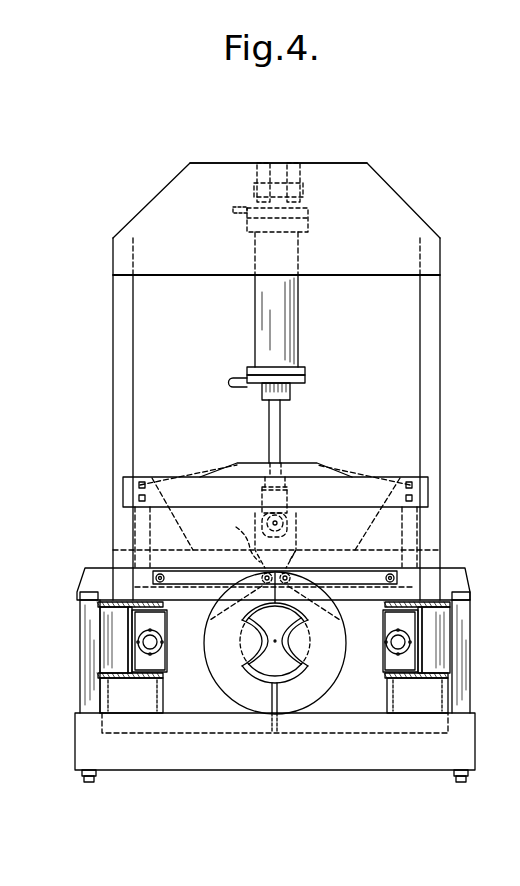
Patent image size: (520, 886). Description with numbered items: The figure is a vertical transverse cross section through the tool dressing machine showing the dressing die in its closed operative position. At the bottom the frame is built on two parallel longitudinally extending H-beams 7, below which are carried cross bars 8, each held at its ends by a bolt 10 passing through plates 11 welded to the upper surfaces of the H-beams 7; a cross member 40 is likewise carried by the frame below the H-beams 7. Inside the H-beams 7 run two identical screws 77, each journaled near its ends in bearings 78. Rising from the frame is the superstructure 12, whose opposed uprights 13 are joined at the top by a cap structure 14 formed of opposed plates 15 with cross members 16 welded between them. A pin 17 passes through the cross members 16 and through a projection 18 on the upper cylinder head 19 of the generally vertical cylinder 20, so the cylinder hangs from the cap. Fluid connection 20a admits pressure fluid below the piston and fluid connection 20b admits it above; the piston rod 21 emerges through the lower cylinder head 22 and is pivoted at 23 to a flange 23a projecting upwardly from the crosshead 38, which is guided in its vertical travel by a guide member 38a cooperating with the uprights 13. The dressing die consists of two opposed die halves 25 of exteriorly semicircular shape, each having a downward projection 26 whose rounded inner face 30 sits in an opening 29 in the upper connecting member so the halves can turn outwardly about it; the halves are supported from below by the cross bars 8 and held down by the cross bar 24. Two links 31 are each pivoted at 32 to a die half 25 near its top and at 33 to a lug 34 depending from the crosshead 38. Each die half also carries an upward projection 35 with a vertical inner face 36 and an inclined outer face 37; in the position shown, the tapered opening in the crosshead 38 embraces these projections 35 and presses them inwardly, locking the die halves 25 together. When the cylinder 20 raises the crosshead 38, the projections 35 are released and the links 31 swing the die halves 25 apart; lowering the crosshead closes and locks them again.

The H-beams 7 is at (130, 622).
The cross bars 8 is at (374, 770).
The bolt 10 is at (95, 782).
The plates 11 is at (110, 598).
The superstructure 12 is at (113, 344).
The uprights 13 is at (118, 307).
The cap structure 14 is at (384, 181).
The plates 15 is at (317, 172).
The cross members 16 is at (288, 170).
The pin 17 is at (300, 192).
The projection 18 is at (257, 183).
The upper cylinder head 19 is at (305, 217).
The cylinder 20 is at (298, 312).
The fluid connection 20a is at (230, 383).
The fluid connection 20b is at (236, 212).
The piston rod 21 is at (280, 425).
The lower cylinder head 22 is at (292, 381).
The pivot 23 is at (283, 510).
The flange 23a is at (260, 515).
The cross bar 24 is at (327, 470).
The die halves 25 is at (226, 682).
The downward projection 26 is at (288, 720).
The opening 29 is at (258, 722).
The inner faces 30 is at (290, 723).
The links 31 is at (198, 583).
The pivot 32 is at (208, 620).
The pivot 33 is at (158, 578).
The lug 34 is at (158, 578).
The upward projection 35 is at (290, 560).
The vertical inner faces 36 is at (288, 558).
The inclined outer faces 37 is at (235, 541).
The crosshead 38 is at (233, 550).
The guide member 38a is at (197, 475).
The cross member 40 is at (137, 733).
The screws 77 is at (150, 643).
The bearings 78 is at (155, 662).